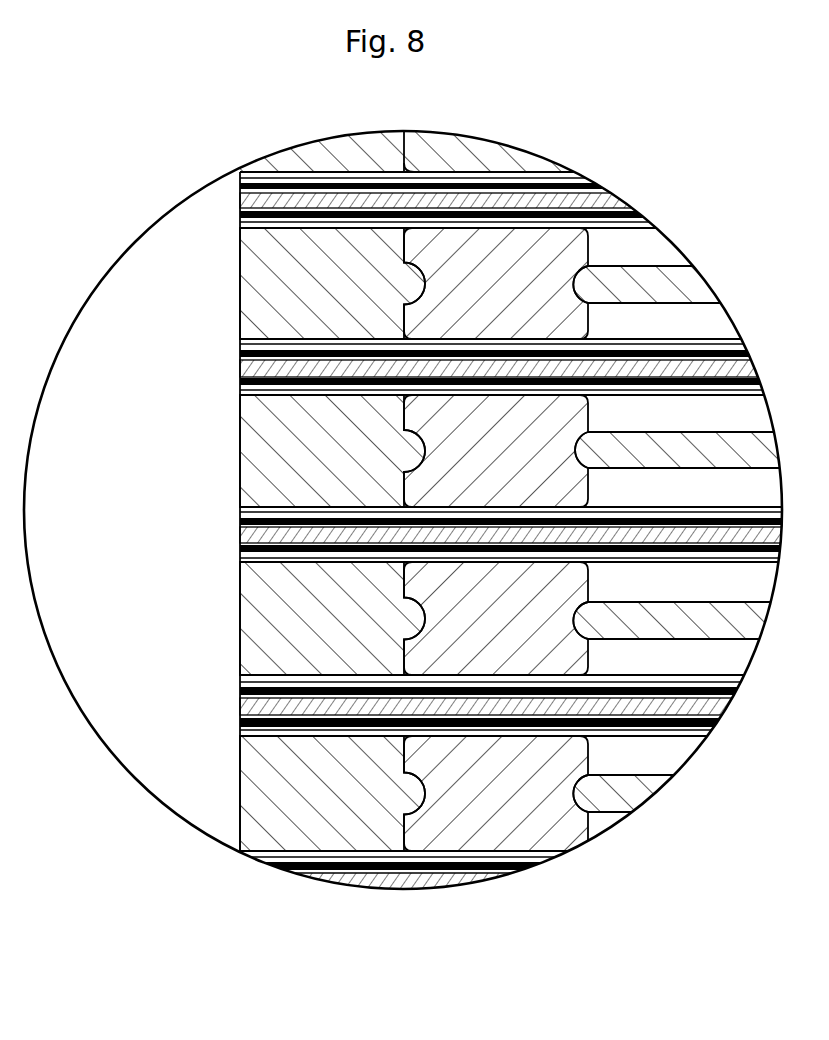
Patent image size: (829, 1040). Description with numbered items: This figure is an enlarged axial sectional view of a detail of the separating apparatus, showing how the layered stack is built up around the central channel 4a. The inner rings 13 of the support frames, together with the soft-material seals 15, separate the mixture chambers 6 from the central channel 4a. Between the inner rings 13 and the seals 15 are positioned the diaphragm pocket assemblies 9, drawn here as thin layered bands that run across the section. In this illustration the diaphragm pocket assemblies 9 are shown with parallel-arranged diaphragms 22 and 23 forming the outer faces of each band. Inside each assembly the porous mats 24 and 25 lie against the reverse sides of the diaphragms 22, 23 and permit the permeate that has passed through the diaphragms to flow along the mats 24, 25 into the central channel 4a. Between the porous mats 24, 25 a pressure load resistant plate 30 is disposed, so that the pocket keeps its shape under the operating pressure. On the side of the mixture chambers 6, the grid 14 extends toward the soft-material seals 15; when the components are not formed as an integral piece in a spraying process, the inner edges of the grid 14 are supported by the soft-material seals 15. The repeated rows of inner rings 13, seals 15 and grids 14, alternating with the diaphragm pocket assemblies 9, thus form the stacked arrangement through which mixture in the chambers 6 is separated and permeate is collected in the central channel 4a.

The central channel 4a is at (212, 662).
The mixture chamber 6 is at (636, 261).
The diaphragm pocket assembly 9 is at (465, 511).
The inner ring 13 is at (290, 296).
The grid 14 is at (690, 284).
The soft-material seal 15 is at (474, 296).
The diaphragm 22 is at (240, 344).
The diaphragm 23 is at (240, 390).
The porous mat 24 is at (240, 353).
The porous mat 25 is at (240, 380).
The pressure load resistant plate 30 is at (240, 366).